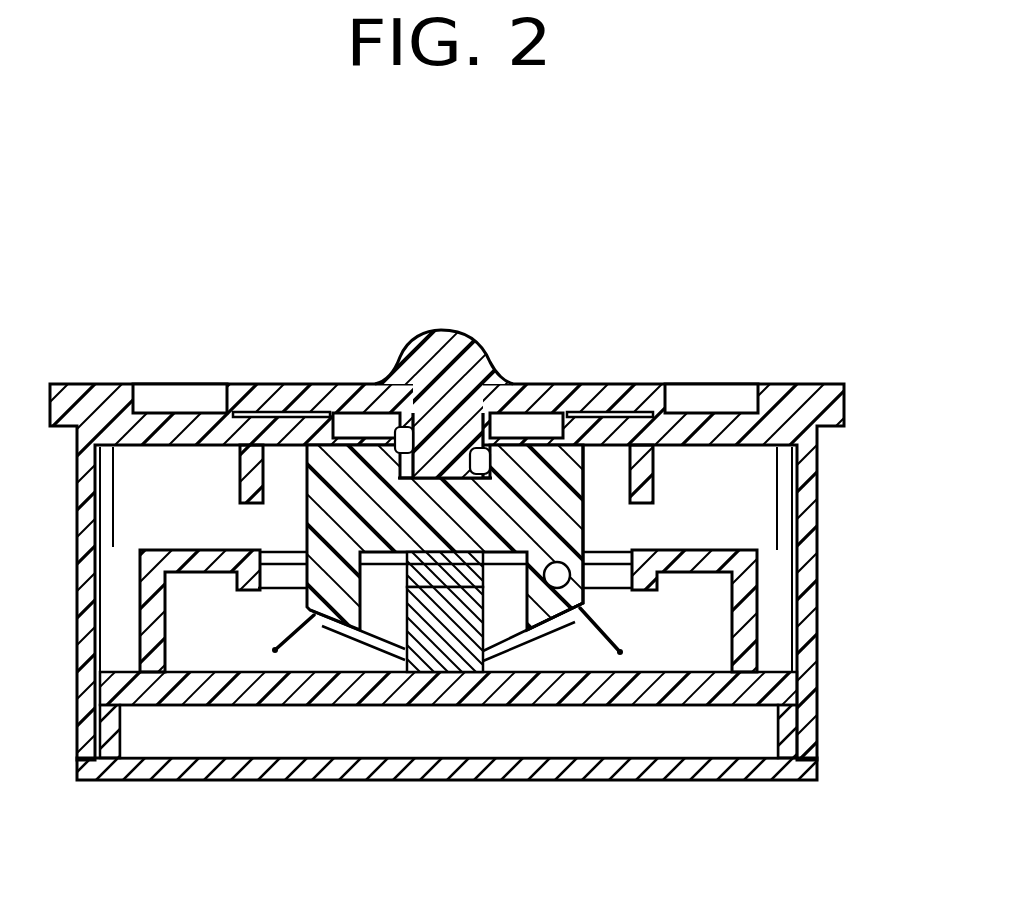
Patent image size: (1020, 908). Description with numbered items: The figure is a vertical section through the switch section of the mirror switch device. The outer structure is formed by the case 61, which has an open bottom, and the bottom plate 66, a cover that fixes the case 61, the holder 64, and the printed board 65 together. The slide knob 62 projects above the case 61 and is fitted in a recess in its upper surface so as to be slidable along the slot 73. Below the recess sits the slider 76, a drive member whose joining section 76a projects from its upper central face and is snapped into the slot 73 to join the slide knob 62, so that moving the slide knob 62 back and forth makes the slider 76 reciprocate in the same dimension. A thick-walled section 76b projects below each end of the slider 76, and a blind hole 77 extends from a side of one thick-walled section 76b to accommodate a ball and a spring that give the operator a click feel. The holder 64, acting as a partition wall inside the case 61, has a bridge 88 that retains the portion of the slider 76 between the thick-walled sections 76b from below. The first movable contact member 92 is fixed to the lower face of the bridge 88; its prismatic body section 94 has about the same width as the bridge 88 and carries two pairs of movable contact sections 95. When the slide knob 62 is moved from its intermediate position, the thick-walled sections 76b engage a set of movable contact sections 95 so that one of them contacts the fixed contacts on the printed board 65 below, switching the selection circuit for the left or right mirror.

The case 61 is at (806, 378).
The slide knob 62 is at (463, 328).
The holder 64 is at (754, 541).
The printed board 65 is at (168, 706).
The bottom plate 66 is at (736, 790).
The slot 73 is at (372, 420).
The slider 76 is at (471, 452).
The joining section 76a is at (518, 475).
The thick-walled section 76b is at (310, 598).
The blind hole 77 is at (558, 562).
The bridge 88 is at (490, 572).
The first movable contact member 92 is at (396, 660).
The body section 94 is at (443, 648).
The movable contact section 95 is at (298, 637).